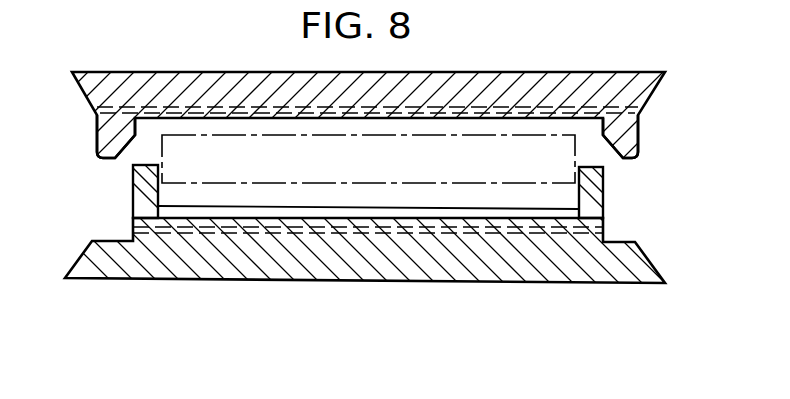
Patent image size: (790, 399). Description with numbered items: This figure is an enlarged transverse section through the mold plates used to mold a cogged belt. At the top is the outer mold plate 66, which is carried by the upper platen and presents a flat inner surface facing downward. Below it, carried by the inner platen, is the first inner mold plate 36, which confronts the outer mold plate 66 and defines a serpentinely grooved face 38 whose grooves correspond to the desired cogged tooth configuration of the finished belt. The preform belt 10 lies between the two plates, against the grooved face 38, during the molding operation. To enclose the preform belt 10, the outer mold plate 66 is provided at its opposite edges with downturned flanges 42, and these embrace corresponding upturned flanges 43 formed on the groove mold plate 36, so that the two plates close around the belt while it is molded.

The preform belt 10 is at (437, 136).
The first inner mold plate 36 is at (323, 272).
The serpentinely grooved face 38 is at (487, 214).
The downturned flanges 42 is at (103, 133).
The upturned flanges 43 is at (138, 190).
The outer mold plate 66 is at (292, 88).